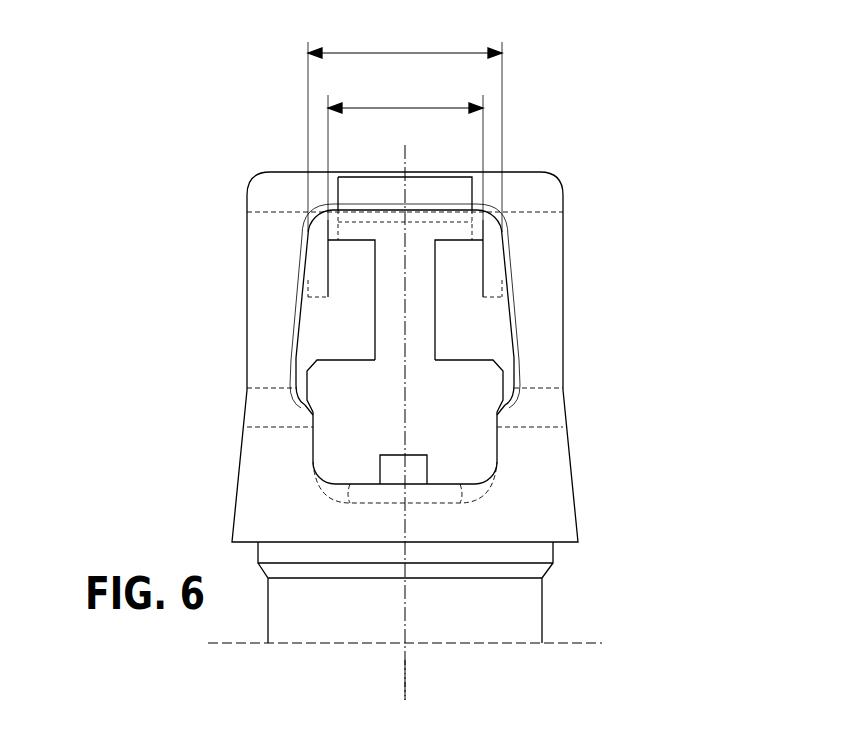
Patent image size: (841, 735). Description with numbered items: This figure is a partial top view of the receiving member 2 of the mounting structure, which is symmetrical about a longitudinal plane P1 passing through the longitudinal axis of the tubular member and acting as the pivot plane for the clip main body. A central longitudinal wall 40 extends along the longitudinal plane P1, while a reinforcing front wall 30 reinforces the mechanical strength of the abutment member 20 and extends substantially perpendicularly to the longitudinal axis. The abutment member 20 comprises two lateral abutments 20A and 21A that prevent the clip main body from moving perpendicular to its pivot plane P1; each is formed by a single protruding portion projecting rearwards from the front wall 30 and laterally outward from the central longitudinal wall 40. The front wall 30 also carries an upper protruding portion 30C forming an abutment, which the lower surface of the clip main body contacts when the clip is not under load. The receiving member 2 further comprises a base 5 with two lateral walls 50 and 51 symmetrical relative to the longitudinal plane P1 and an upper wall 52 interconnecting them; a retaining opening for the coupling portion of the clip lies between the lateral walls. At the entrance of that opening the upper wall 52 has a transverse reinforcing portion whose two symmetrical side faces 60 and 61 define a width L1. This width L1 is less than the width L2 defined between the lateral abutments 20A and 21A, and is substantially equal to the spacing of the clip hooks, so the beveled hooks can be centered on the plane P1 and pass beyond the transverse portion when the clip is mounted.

The receiving member 2 is at (257, 162).
The base 5 is at (513, 270).
The abutment member 20 is at (392, 397).
The lateral abutment 20A is at (308, 393).
The lateral abutment 21A is at (510, 392).
The reinforcing front wall 30 is at (340, 447).
The upper protruding portion 30C is at (415, 466).
The central longitudinal wall 40 is at (392, 342).
The lateral wall 50 is at (300, 272).
The lateral wall 51 is at (518, 352).
The upper wall 52 is at (457, 328).
The side face 60 is at (327, 230).
The side face 61 is at (489, 231).
The width of the transverse portion L1 is at (405, 98).
The width between the lateral abutments L2 is at (405, 43).
The longitudinal plane P1 is at (405, 681).